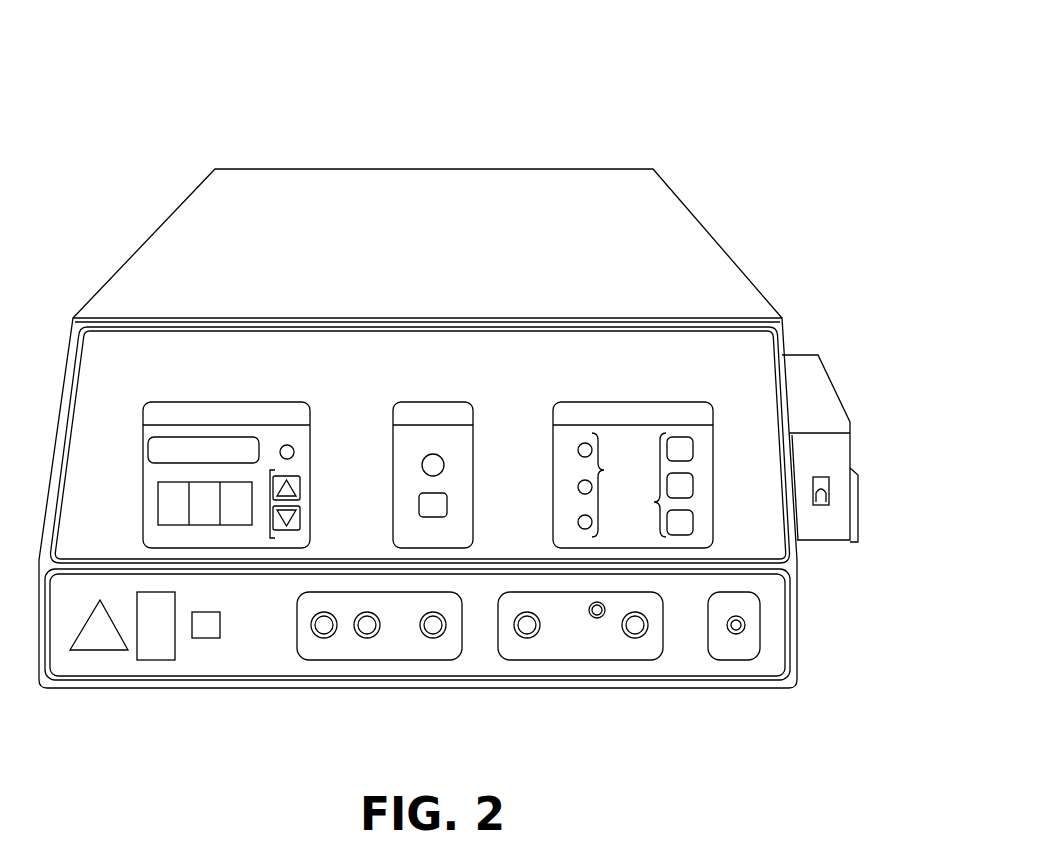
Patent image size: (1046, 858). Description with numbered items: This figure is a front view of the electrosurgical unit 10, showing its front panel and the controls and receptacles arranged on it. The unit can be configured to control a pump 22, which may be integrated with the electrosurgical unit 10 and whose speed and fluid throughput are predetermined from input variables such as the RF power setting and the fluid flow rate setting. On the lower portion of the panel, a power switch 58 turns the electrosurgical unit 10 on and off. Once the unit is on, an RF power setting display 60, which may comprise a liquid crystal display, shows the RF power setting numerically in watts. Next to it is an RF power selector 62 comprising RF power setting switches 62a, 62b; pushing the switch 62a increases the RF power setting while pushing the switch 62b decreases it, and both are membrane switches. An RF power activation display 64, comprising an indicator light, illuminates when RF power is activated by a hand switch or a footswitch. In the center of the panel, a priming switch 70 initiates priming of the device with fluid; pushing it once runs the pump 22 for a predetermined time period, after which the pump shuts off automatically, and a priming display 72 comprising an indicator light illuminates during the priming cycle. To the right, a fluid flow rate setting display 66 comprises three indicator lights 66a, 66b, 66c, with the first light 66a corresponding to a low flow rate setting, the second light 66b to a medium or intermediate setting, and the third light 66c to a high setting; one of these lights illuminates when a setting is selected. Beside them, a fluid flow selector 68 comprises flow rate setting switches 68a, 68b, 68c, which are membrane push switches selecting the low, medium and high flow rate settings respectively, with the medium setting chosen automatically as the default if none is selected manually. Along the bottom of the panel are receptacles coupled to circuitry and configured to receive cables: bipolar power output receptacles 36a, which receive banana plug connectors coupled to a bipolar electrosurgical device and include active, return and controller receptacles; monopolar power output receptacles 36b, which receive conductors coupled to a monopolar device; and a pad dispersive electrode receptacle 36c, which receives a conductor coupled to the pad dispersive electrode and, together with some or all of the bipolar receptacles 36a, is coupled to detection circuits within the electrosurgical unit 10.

The electrosurgical unit 10 is at (628, 75).
The pump 22 is at (836, 527).
The bipolar power output receptacles 36a is at (383, 662).
The monopolar power output receptacles 36b is at (578, 662).
The pad dispersive electrode receptacle 36c is at (730, 662).
The power switch 58 is at (152, 662).
The RF power setting display 60 is at (158, 503).
The RF power selector 62 is at (268, 503).
The RF power setting switch 62a is at (300, 488).
The RF power setting switch 62b is at (300, 518).
The RF power activation display 64 is at (295, 452).
The fluid flow rate setting display 66 is at (633, 475).
The first light 66a is at (578, 522).
The second light 66b is at (578, 487).
The third light 66c is at (578, 450).
The fluid flow selector 68 is at (647, 485).
The first switch 68a is at (693, 522).
The second switch 68b is at (693, 487).
The third switch 68c is at (693, 450).
The priming switch 70 is at (448, 505).
The priming display 72 is at (445, 465).